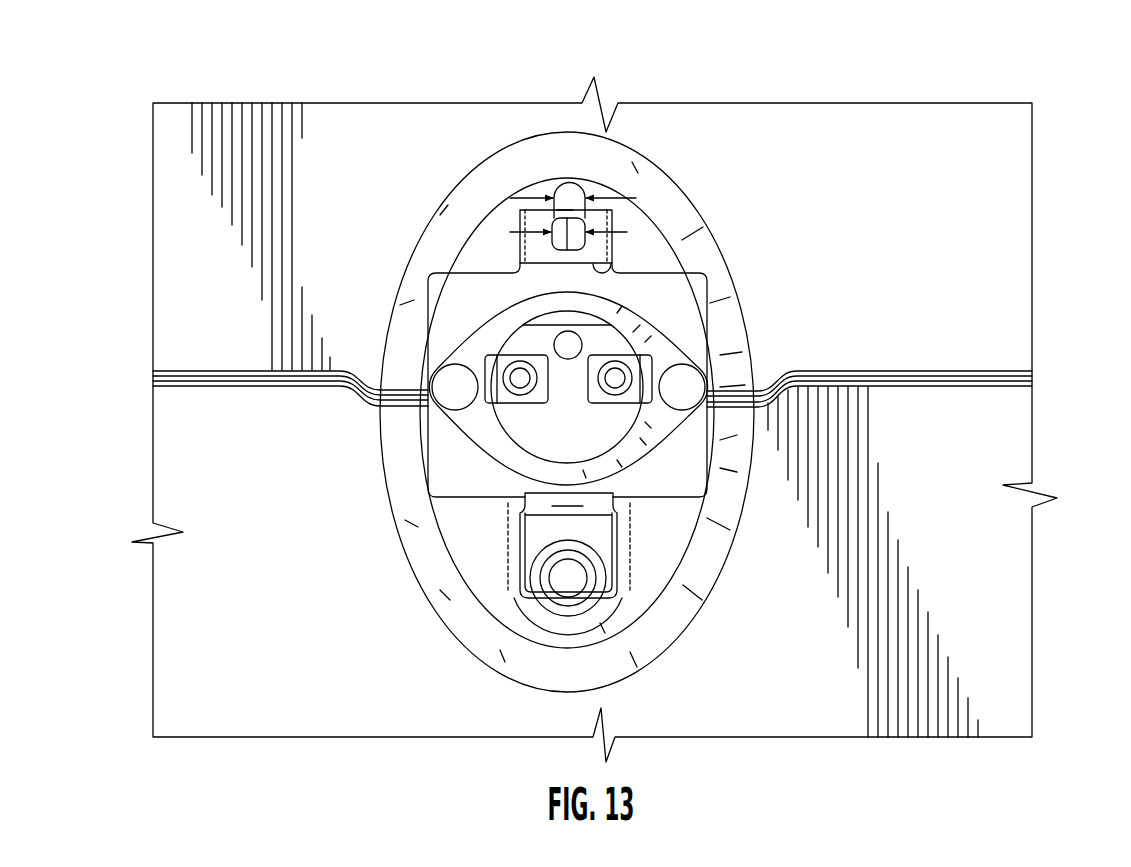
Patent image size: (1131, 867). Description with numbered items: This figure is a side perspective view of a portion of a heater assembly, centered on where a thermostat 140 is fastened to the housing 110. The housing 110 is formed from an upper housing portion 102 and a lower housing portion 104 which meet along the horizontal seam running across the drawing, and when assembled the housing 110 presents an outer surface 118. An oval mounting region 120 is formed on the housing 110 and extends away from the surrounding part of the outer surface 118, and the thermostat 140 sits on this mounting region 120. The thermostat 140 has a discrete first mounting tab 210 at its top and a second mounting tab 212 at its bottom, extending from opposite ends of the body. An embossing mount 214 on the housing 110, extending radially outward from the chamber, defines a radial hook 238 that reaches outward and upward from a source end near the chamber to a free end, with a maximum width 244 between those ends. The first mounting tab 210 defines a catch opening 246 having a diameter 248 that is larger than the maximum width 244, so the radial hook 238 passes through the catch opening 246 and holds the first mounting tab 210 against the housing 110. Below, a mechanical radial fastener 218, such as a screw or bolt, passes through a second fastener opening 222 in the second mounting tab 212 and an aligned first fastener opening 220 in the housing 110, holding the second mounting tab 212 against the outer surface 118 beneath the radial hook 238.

The housing 110 is at (958, 117).
The upper housing portion 102 is at (1031, 235).
The lower housing portion 104 is at (1031, 712).
The outer surface 118 is at (1012, 652).
The mounting region 120 is at (412, 307).
The thermostat 140 is at (527, 436).
The first mounting tab 210 is at (612, 267).
The second mounting tab 212 is at (608, 535).
The embossing mount 214 is at (562, 190).
The radial hook 238 is at (562, 133).
The radial fastener 218 is at (578, 582).
The first fastener opening 220 is at (561, 607).
The second fastener opening 222 is at (545, 544).
The maximum width 244 is at (527, 198).
The catch opening 246 is at (561, 253).
The diameter 248 is at (508, 232).